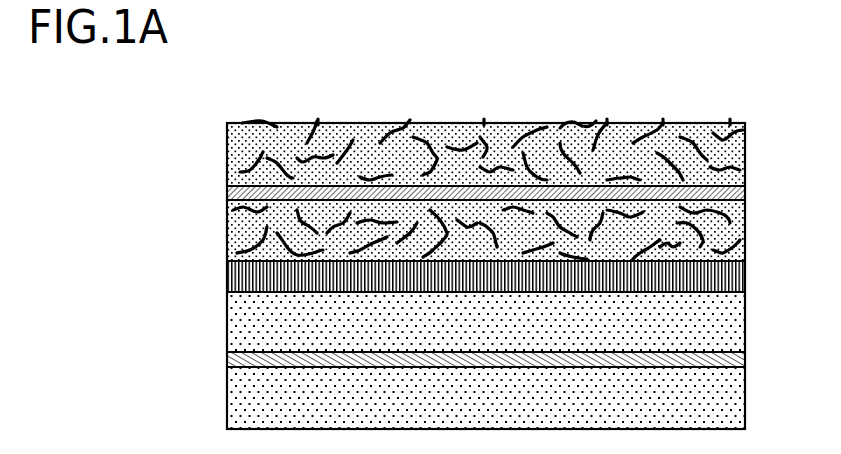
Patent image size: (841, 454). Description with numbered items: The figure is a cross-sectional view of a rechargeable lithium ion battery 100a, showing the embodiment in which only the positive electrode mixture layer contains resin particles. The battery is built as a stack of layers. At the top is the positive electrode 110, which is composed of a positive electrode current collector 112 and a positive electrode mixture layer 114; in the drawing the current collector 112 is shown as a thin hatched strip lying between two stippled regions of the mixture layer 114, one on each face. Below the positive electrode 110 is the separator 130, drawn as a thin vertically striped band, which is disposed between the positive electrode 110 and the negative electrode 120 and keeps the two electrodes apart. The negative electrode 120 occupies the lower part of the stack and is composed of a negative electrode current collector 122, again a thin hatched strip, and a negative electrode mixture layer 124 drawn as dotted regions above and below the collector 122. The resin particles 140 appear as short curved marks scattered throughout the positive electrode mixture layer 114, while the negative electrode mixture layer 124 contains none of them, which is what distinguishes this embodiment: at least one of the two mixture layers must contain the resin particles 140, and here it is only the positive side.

The rechargeable lithium ion battery 100a is at (695, 84).
The positive electrode 110 is at (474, 190).
The positive electrode current collector 112 is at (227, 196).
The positive electrode mixture layer 114 is at (227, 157).
The negative electrode 120 is at (474, 361).
The negative electrode current collector 122 is at (227, 364).
The negative electrode mixture layer 124 is at (227, 327).
The separator 130 is at (758, 263).
The resin particles 140 is at (573, 125).